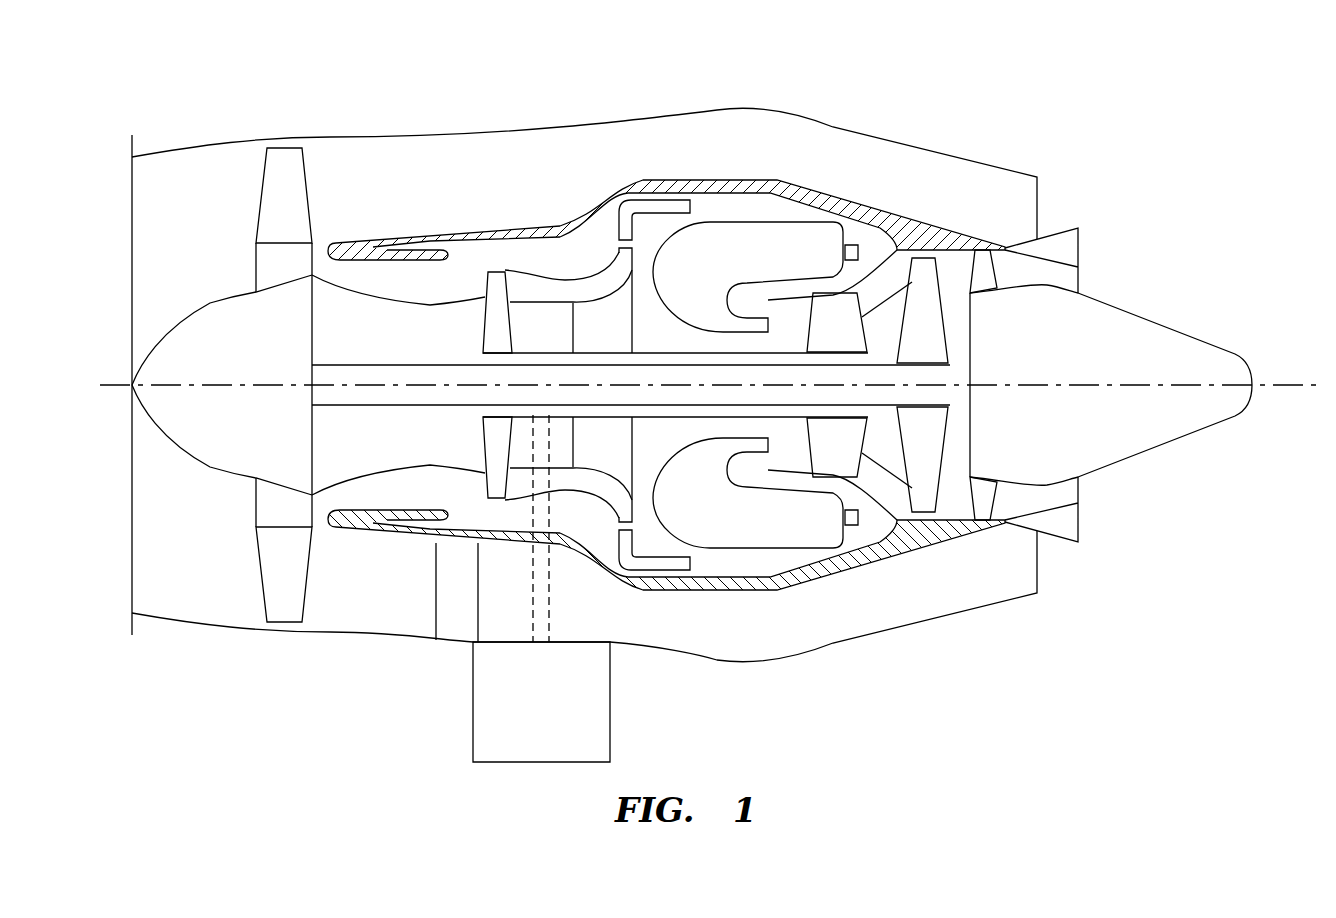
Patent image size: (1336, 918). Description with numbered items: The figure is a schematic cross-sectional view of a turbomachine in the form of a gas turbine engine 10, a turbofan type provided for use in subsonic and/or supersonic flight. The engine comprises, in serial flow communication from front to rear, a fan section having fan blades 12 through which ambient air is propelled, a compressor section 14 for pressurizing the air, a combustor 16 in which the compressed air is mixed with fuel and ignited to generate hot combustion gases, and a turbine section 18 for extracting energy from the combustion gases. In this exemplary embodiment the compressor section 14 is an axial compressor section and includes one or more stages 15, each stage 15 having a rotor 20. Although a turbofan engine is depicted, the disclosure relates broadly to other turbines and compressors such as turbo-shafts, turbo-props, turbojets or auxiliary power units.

The gas turbine engine 10 is at (920, 125).
The fan blades 12 is at (287, 540).
The compressor section 14 is at (553, 293).
The stage 15 is at (502, 270).
The combustor 16 is at (757, 243).
The turbine section 18 is at (885, 443).
The rotor 20 is at (498, 288).